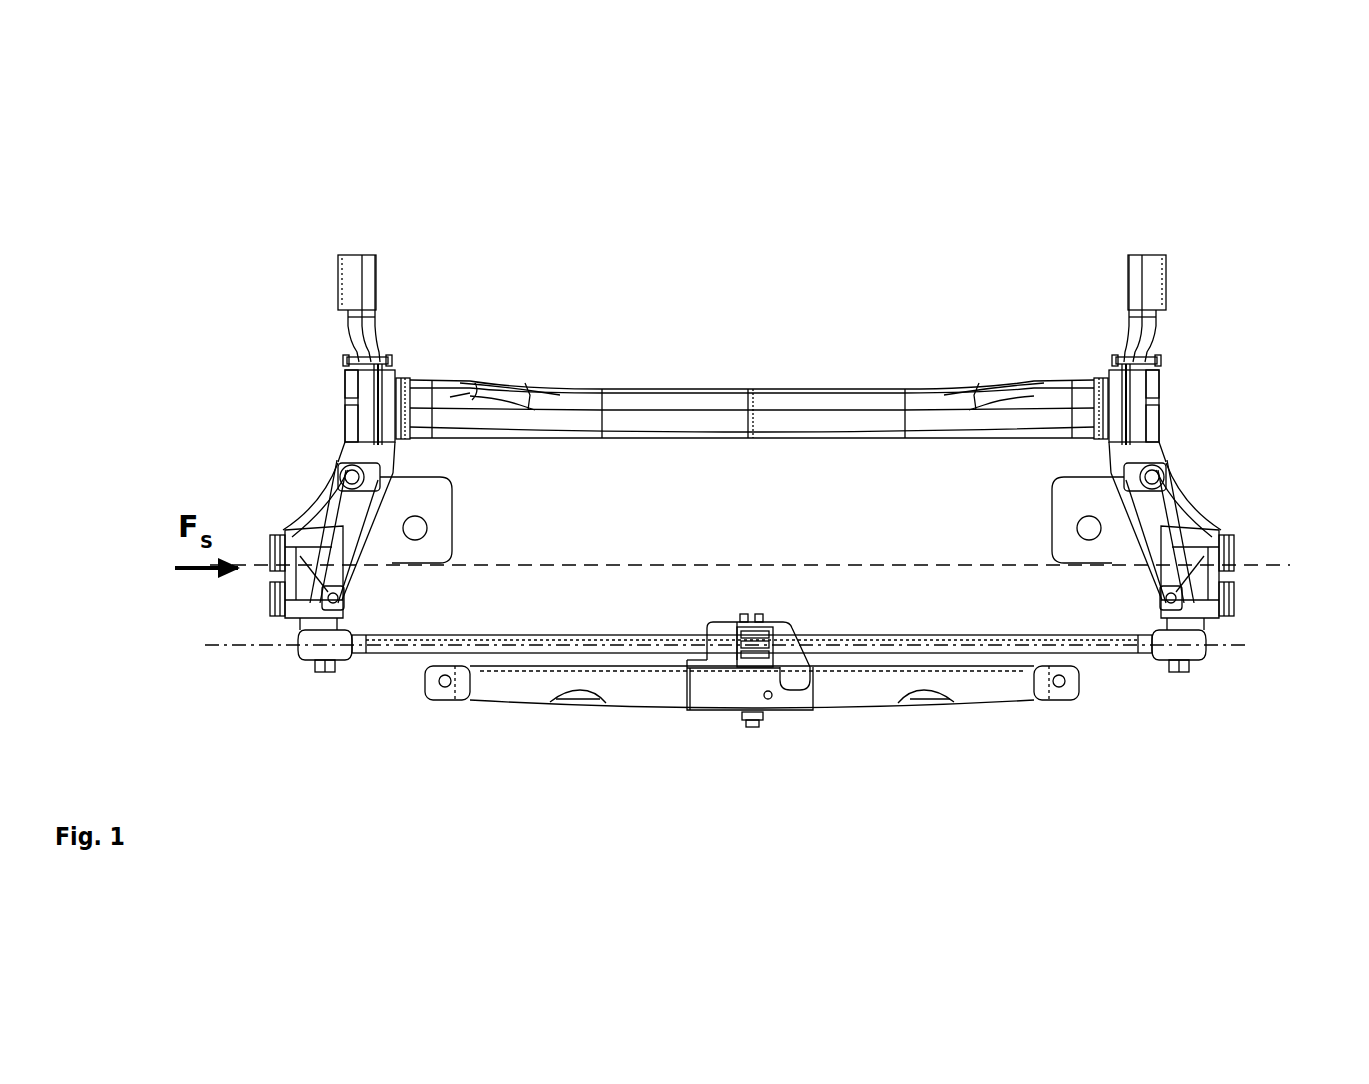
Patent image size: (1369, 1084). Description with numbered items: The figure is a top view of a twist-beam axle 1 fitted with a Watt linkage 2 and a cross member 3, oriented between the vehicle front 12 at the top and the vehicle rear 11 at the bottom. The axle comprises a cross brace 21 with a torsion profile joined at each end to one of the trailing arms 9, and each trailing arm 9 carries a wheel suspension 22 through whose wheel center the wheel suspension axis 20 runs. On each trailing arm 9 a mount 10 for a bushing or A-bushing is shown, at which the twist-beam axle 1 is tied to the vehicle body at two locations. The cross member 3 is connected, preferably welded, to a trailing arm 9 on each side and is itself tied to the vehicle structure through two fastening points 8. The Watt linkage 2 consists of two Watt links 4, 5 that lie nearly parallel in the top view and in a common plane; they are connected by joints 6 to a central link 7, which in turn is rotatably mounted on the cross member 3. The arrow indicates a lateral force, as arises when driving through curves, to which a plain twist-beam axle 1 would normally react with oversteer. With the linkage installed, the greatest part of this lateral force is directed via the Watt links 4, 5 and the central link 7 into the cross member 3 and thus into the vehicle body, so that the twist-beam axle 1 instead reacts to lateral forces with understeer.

The twist-beam axle 1 is at (668, 364).
The Watt linkage 2 is at (402, 667).
The cross member 3 is at (968, 665).
The Watt link 4 is at (628, 630).
The Watt link 5 is at (965, 632).
The joints 6 is at (750, 672).
The central link 7 is at (733, 628).
The fastening points 8 is at (457, 683).
The trailing arms 9 is at (348, 330).
The mount 10 is at (392, 279).
The vehicle rear 11 is at (707, 834).
The vehicle front 12 is at (722, 165).
The wheel suspension axis 20 is at (952, 560).
The cross brace 21 is at (790, 400).
The wheel suspension 22 is at (272, 598).